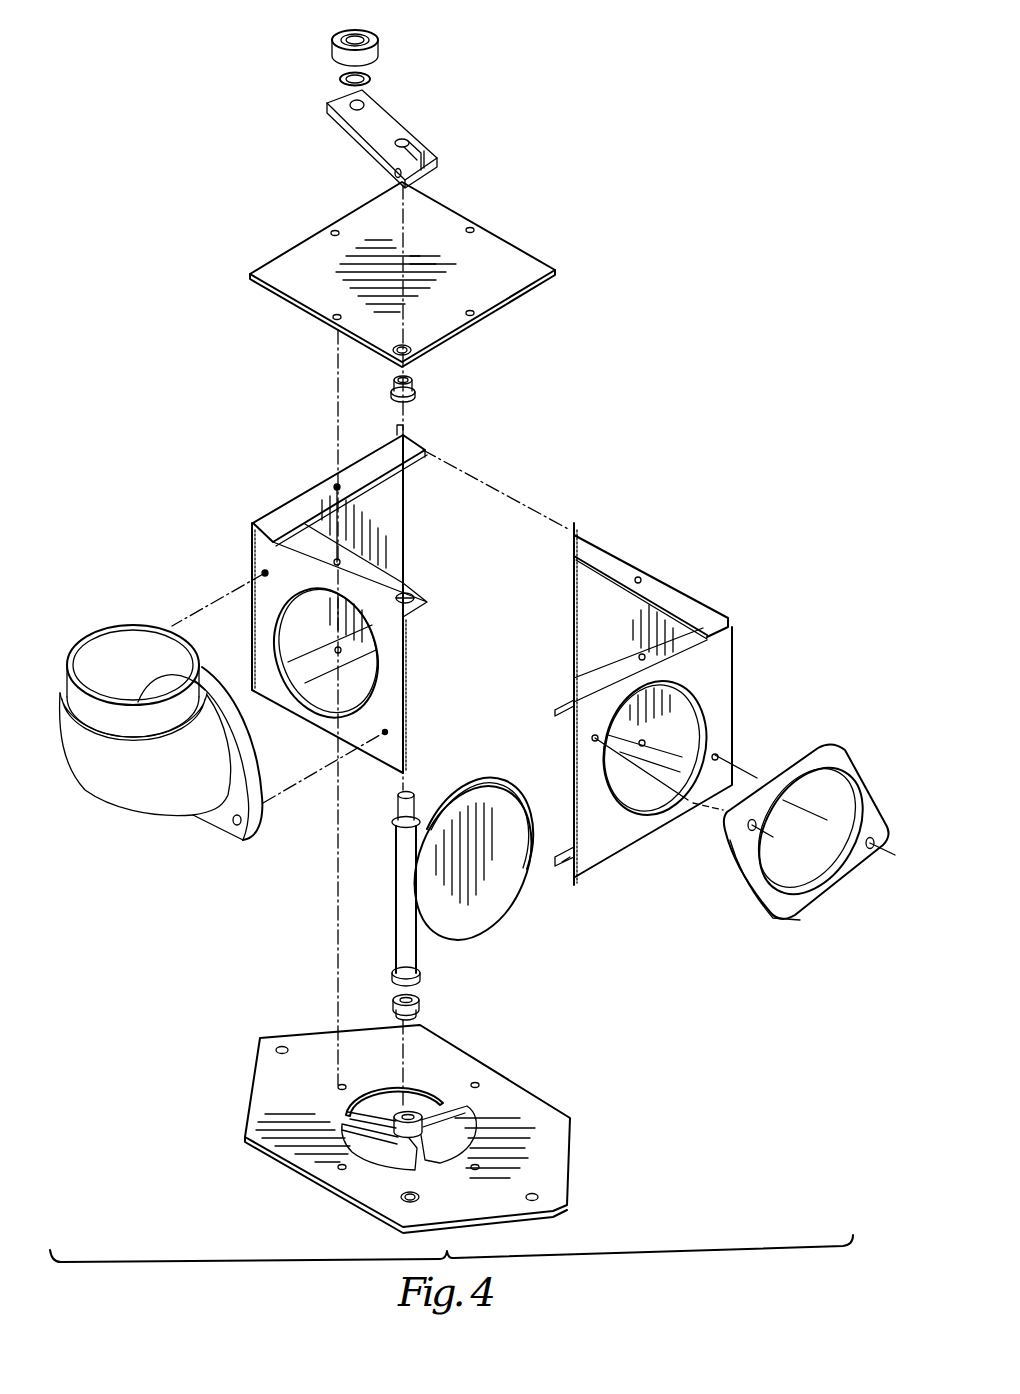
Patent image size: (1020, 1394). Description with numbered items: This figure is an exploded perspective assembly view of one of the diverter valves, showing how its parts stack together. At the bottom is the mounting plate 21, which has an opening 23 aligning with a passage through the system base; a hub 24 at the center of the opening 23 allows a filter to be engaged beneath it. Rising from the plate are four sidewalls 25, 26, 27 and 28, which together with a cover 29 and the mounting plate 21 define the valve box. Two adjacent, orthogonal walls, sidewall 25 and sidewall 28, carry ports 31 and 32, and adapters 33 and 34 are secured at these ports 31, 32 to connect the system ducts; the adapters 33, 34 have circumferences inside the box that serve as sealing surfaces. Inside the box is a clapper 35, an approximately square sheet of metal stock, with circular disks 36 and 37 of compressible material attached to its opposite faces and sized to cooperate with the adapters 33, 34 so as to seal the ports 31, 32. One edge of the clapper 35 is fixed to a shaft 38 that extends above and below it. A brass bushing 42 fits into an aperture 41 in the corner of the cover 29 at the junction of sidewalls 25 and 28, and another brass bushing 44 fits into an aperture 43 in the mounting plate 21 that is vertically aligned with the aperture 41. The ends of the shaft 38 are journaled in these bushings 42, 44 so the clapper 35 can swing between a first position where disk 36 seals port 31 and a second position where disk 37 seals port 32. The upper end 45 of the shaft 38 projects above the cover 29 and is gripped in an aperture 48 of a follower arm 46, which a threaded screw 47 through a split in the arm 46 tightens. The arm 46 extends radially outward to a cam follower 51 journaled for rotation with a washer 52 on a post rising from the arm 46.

The mounting plate 21 is at (440, 1128).
The opening 23 is at (430, 1093).
The hub 24 is at (402, 1108).
The sidewall 25 is at (325, 599).
The sidewall 26 is at (372, 513).
The sidewall 27 is at (658, 704).
The sidewall 28 is at (692, 750).
The cover 29 is at (511, 267).
The port 31 is at (262, 573).
The port 32 is at (692, 707).
The adapter 33 is at (167, 790).
The adapter 34 is at (793, 905).
The clapper 35 is at (475, 830).
The circular disk 36 is at (432, 808).
The circular disk 37 is at (470, 912).
The shaft 38 is at (394, 932).
The aperture 41 is at (412, 348).
The brass bushing 42 is at (416, 393).
The aperture 43 is at (398, 1193).
The brass bushing 44 is at (420, 1004).
The upper end of the shaft 45 is at (392, 822).
The follower arm 46 is at (388, 125).
The threaded screw 47 is at (396, 174).
The aperture 48 is at (409, 143).
The cam follower 51 is at (380, 56).
The washer 52 is at (342, 77).